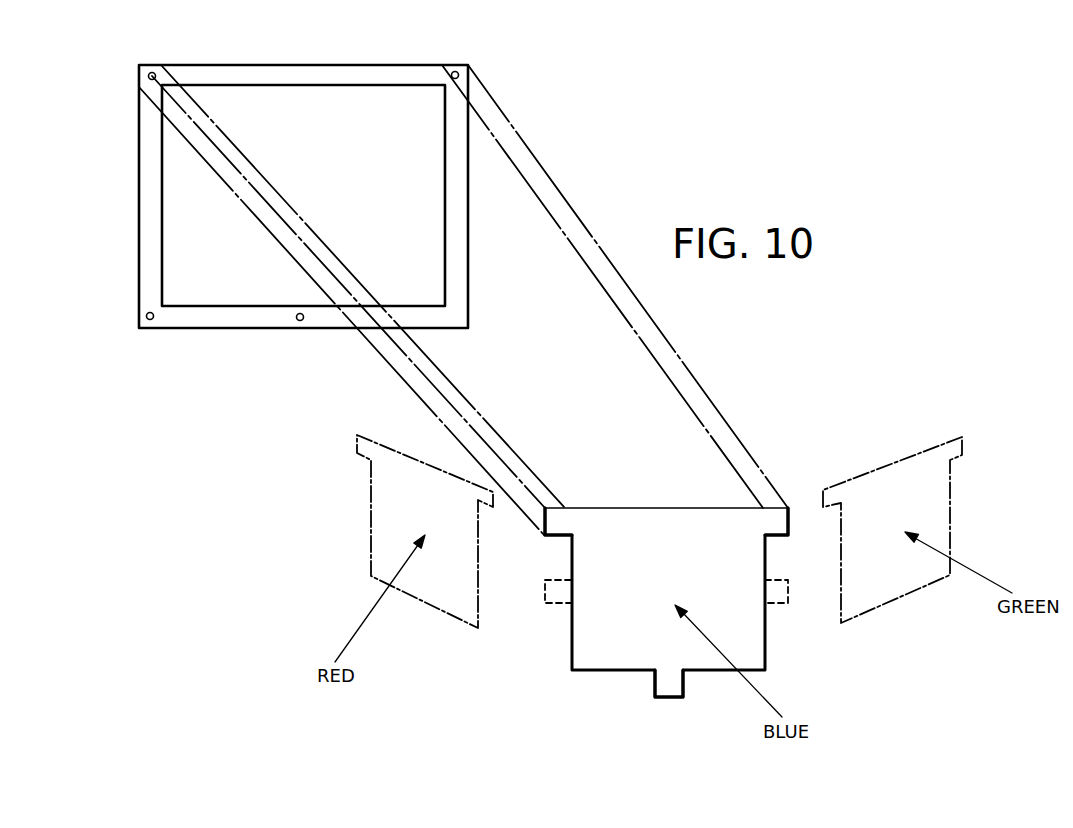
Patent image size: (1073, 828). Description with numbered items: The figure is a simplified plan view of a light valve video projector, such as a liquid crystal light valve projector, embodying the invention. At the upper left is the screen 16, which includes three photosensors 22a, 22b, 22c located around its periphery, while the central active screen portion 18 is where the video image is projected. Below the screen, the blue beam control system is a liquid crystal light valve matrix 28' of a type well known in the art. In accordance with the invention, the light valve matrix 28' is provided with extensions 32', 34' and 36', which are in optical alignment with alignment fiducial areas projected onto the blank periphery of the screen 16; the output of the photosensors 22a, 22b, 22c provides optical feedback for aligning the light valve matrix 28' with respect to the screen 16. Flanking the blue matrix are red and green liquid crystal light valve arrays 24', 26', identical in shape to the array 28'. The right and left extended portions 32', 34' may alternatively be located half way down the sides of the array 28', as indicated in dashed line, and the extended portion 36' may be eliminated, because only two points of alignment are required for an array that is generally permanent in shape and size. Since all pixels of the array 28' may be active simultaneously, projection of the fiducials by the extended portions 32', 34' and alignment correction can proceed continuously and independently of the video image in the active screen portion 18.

The screen 16 is at (140, 183).
The active screen portion 18 is at (338, 193).
The photosensor 22a is at (153, 72).
The photosensor 22b is at (457, 71).
The photosensor 22c is at (303, 321).
The red liquid crystal light valve array 24' is at (383, 531).
The green liquid crystal light valve array 26' is at (922, 530).
The liquid crystal light valve matrix 28' is at (693, 602).
The extension 32' is at (574, 495).
The extension 34' is at (787, 491).
The extension 36' is at (622, 694).